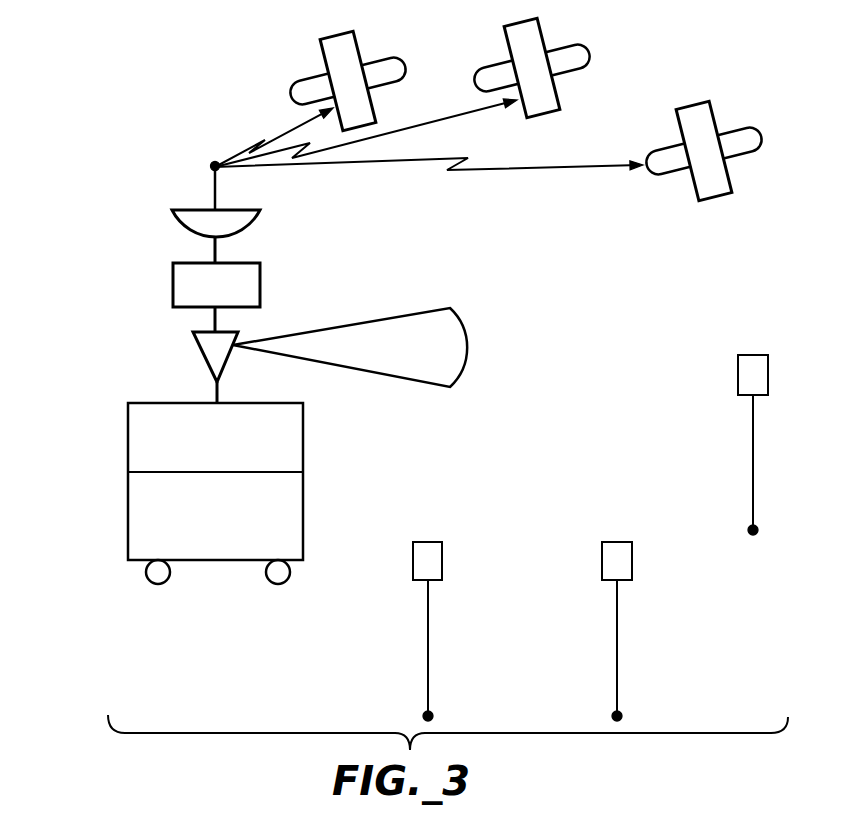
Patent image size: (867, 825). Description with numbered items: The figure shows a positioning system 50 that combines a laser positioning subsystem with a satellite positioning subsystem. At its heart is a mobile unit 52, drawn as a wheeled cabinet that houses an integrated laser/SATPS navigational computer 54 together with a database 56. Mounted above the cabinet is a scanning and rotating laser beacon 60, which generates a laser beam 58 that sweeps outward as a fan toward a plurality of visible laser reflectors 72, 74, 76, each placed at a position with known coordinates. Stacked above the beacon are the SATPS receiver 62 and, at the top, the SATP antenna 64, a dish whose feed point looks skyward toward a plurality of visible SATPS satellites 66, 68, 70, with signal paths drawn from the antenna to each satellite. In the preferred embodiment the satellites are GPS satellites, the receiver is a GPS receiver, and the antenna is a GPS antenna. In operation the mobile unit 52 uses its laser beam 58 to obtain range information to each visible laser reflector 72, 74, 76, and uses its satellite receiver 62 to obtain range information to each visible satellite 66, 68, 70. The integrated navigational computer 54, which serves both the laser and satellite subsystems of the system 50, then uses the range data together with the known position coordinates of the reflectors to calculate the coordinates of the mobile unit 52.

The positioning system 50 is at (145, 633).
The mobile unit 52 is at (113, 405).
The integrated laser/SATPS navigational computer 54 is at (292, 523).
The database 56 is at (292, 460).
The laser beam 58 is at (407, 310).
The scanning and rotating laser beacon 60 is at (197, 347).
The SATPS receiver 62 is at (172, 285).
The SATP antenna 64 is at (200, 210).
The visible SATPS satellite 66 is at (318, 50).
The visible SATPS satellite 68 is at (542, 33).
The visible SATPS satellite 70 is at (717, 117).
The visible laser reflector 72 is at (752, 467).
The visible laser reflector 74 is at (615, 652).
The visible laser reflector 76 is at (427, 652).